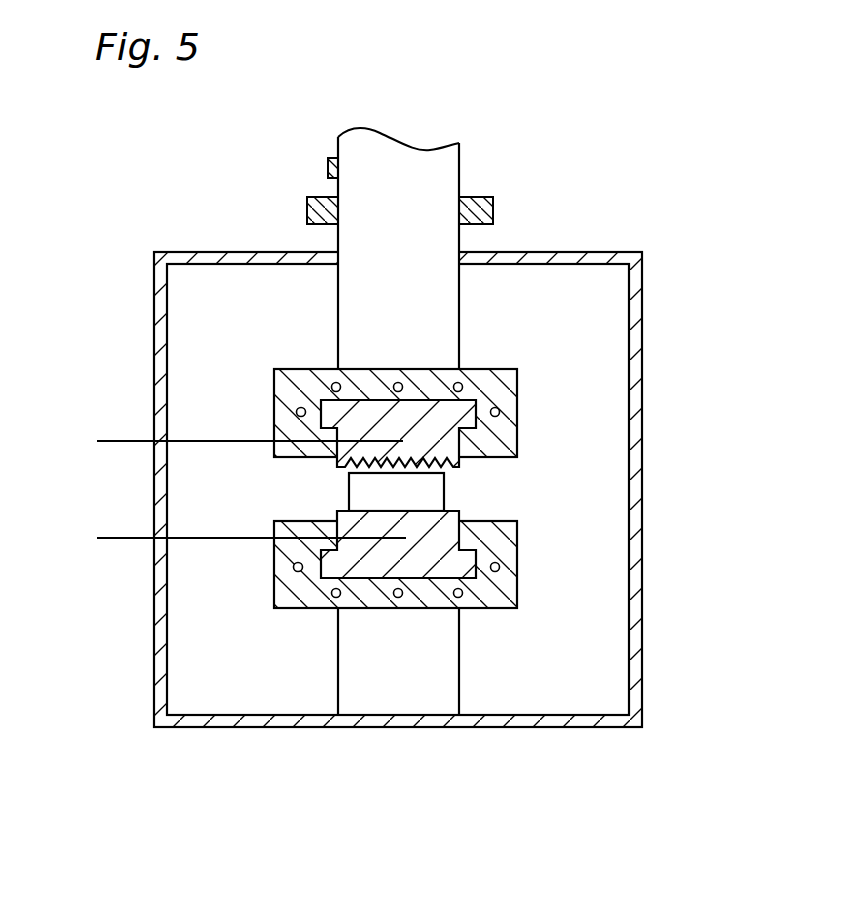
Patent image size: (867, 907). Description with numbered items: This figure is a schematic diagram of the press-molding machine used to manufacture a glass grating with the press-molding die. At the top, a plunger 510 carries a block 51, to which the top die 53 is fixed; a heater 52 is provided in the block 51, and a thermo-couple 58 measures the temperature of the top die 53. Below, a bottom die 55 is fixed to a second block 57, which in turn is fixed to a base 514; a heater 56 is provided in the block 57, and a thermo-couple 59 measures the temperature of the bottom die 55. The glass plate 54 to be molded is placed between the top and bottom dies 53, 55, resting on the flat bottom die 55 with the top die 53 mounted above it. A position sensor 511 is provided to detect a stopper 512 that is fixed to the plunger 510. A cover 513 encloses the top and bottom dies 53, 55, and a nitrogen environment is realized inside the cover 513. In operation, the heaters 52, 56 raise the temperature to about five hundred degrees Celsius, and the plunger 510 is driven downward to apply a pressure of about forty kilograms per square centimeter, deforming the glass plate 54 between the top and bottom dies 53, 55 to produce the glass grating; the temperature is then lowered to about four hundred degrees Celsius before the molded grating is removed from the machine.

The block 51 is at (497, 382).
The heater 52 is at (503, 411).
The top die 53 is at (462, 419).
The glass plate 54 is at (430, 487).
The bottom die 55 is at (449, 535).
The heater 56 is at (513, 575).
The block 57 is at (510, 608).
The thermo-couple 58 is at (110, 441).
The thermo-couple 59 is at (110, 538).
The plunger 510 is at (439, 167).
The position sensor 511 is at (327, 161).
The stopper 512 is at (482, 198).
The cover 513 is at (542, 727).
The base 514 is at (396, 706).